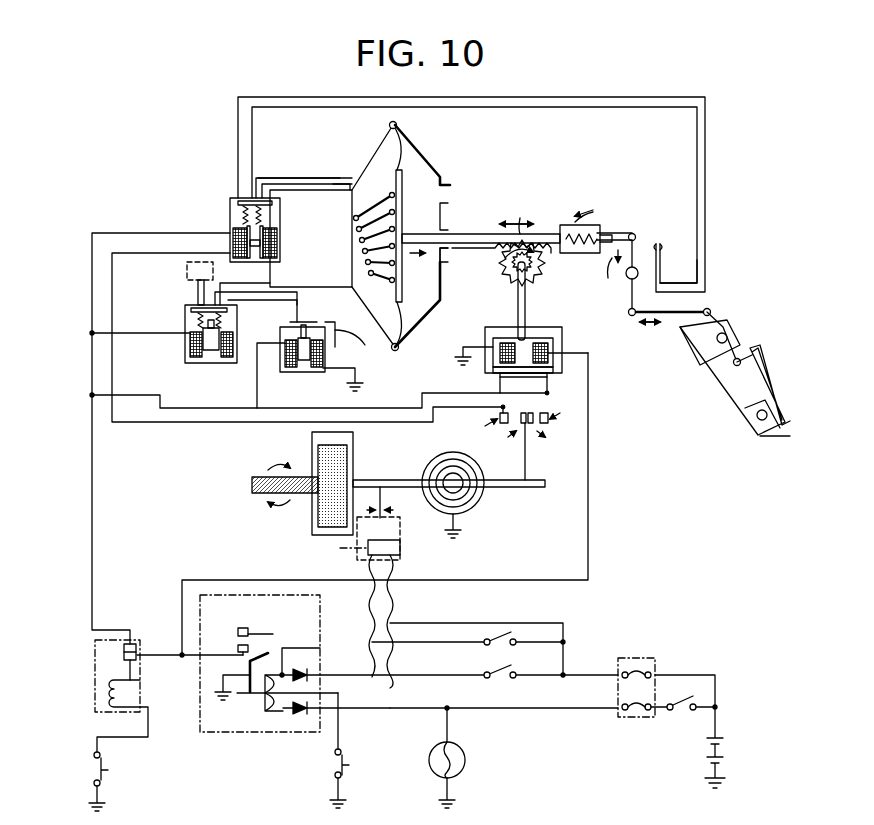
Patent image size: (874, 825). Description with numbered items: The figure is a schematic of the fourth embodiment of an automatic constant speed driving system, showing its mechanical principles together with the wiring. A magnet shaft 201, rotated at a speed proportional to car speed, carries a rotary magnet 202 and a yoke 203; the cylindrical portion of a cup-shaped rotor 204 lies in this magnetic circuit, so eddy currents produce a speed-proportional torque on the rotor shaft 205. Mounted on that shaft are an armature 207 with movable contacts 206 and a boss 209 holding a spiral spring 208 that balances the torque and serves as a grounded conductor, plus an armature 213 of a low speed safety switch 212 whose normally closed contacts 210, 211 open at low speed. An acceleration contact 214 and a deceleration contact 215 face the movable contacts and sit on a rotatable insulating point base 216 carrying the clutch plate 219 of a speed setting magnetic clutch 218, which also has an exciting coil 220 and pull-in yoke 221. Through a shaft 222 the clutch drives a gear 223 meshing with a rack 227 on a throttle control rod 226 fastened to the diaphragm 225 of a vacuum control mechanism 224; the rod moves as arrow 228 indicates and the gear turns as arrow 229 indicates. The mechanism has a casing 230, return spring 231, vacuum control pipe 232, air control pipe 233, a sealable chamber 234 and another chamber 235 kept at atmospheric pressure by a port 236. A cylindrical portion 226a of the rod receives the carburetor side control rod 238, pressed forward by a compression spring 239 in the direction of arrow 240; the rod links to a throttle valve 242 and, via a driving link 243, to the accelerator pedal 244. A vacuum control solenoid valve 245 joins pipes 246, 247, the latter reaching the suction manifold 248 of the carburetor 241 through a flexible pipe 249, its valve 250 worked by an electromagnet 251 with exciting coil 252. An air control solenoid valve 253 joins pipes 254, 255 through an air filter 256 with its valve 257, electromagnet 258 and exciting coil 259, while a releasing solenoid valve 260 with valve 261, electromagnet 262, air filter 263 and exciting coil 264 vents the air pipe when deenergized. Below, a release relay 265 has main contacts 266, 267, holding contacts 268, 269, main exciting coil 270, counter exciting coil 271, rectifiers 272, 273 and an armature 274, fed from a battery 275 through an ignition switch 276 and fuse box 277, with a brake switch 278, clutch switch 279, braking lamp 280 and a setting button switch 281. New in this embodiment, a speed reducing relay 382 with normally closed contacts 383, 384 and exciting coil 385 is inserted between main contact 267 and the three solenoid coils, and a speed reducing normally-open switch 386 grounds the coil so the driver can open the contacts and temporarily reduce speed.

The magnet shaft 201 is at (250, 490).
The rotary magnet 202 is at (322, 500).
The yoke 203 is at (318, 530).
The cup-shaped rotor 204 is at (354, 460).
The rotor shaft 205 is at (517, 488).
The movable contacts 206 is at (545, 426).
The armature 207 is at (525, 460).
The spiral spring 208 is at (462, 502).
The boss 209 is at (456, 516).
The normally closed contact 210 is at (358, 561).
The normally closed contact 211 is at (398, 556).
The low speed safety switch 212 is at (416, 542).
The armature 213 is at (384, 512).
The acceleration contact 214 is at (496, 425).
The deceleration contact 215 is at (550, 418).
The point base 216 is at (548, 379).
The speed setting magnetic clutch 218 is at (562, 346).
The clutch plate 219 is at (493, 374).
The exciting coil 220 is at (554, 357).
The pull-in yoke 221 is at (534, 335).
The shaft 222 is at (508, 278).
The gear 223 is at (538, 276).
The vacuum control mechanism 224 is at (398, 125).
The diaphragm 225 is at (418, 176).
The throttle control rod 226 is at (476, 234).
The cylindrical portion 226a is at (583, 196).
The rack 227 is at (535, 225).
The arrow 228 is at (519, 211).
The arrow 229 is at (437, 275).
The casing 230 is at (377, 125).
The return spring 231 is at (352, 250).
The vacuum control pipe 232 is at (333, 182).
The air control pipe 233 is at (335, 294).
The chamber 234 is at (356, 197).
The chamber 235 is at (415, 300).
The port 236 is at (444, 190).
The carburetor side control rod 238 is at (637, 237).
The compression spring 239 is at (636, 208).
The arrow 240 is at (590, 232).
The carburetor 241 is at (672, 250).
The throttle valve 242 is at (620, 271).
The driving link 243 is at (688, 310).
The accelerator pedal 244 is at (755, 370).
The vacuum control solenoid valve 245 is at (235, 200).
The pipe 246 is at (288, 178).
The pipe 247 is at (240, 174).
The suction manifold 248 is at (700, 275).
The flexible pipe 249 is at (548, 97).
The valve 250 is at (257, 178).
The electromagnet 251 is at (285, 251).
The exciting coil 252 is at (237, 234).
The air control solenoid valve 253 is at (184, 329).
The pipe 254 is at (246, 294).
The pipe 255 is at (198, 292).
The air filter 256 is at (185, 270).
The valve 257 is at (282, 306).
The electromagnet 258 is at (232, 362).
The exciting coil 259 is at (187, 350).
The releasing solenoid valve 260 is at (294, 343).
The valve 261 is at (400, 350).
The electromagnet 262 is at (355, 383).
The air filter 263 is at (338, 352).
The exciting coil 264 is at (277, 368).
The release relay 265 is at (200, 728).
The main contact 266 is at (240, 628).
The main contact 267 is at (240, 652).
The holding contact 268 is at (246, 683).
The holding contact 269 is at (250, 705).
The main exciting coil 270 is at (269, 712).
The counter exciting coil 271 is at (280, 715).
The rectifier 272 is at (308, 672).
The rectifier 273 is at (295, 720).
The armature 274 is at (242, 667).
The battery 275 is at (721, 752).
The ignition switch 276 is at (682, 712).
The fuse box 277 is at (635, 658).
The brake switch 278 is at (497, 675).
The clutch switch 279 is at (485, 647).
The braking lamp 280 is at (467, 757).
The setting button switch 281 is at (348, 757).
The speed reducing relay 382 is at (105, 656).
The normally closed contact 383 is at (133, 642).
The normally closed contact 384 is at (132, 677).
The exciting coil 385 is at (100, 700).
The speed reducing normally-open switch 386 is at (104, 780).